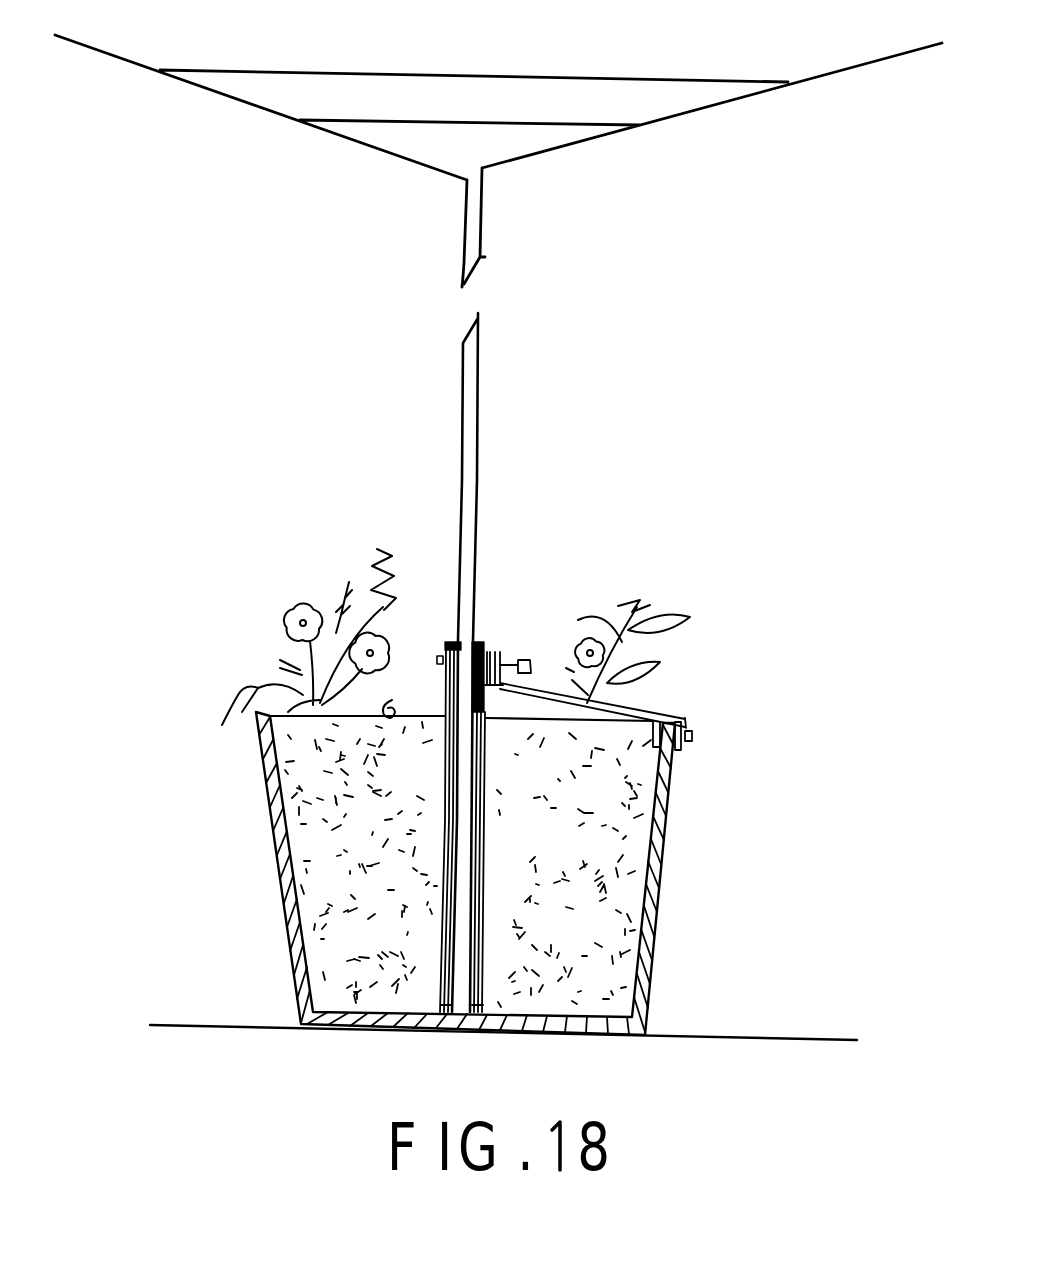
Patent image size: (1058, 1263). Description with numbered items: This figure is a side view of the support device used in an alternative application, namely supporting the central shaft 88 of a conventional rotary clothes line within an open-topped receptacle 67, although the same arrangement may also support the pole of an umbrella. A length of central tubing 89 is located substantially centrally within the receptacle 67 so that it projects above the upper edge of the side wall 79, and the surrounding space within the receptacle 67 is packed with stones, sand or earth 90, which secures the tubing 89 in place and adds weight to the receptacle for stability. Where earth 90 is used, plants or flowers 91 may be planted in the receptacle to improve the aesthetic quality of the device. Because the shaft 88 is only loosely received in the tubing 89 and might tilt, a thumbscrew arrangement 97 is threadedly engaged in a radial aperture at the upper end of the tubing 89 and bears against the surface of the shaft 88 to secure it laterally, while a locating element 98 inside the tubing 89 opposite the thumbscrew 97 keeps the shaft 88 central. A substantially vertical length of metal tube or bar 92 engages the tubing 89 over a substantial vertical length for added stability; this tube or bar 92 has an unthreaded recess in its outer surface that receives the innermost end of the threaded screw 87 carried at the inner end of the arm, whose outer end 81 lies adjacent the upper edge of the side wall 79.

The open-topped receptacle 67 is at (516, 873).
The side wall 79 is at (653, 833).
The outer end of arm 81 is at (718, 719).
The threaded screw 87 is at (533, 665).
The central shaft 88 is at (468, 455).
The central tubing 89 is at (447, 917).
The stones, sand or earth 90 is at (337, 828).
The plants or flowers 91 is at (633, 583).
The tube or bar 92 is at (495, 648).
The thumbscrew arrangement 97 is at (433, 653).
The locating element 98 is at (480, 640).